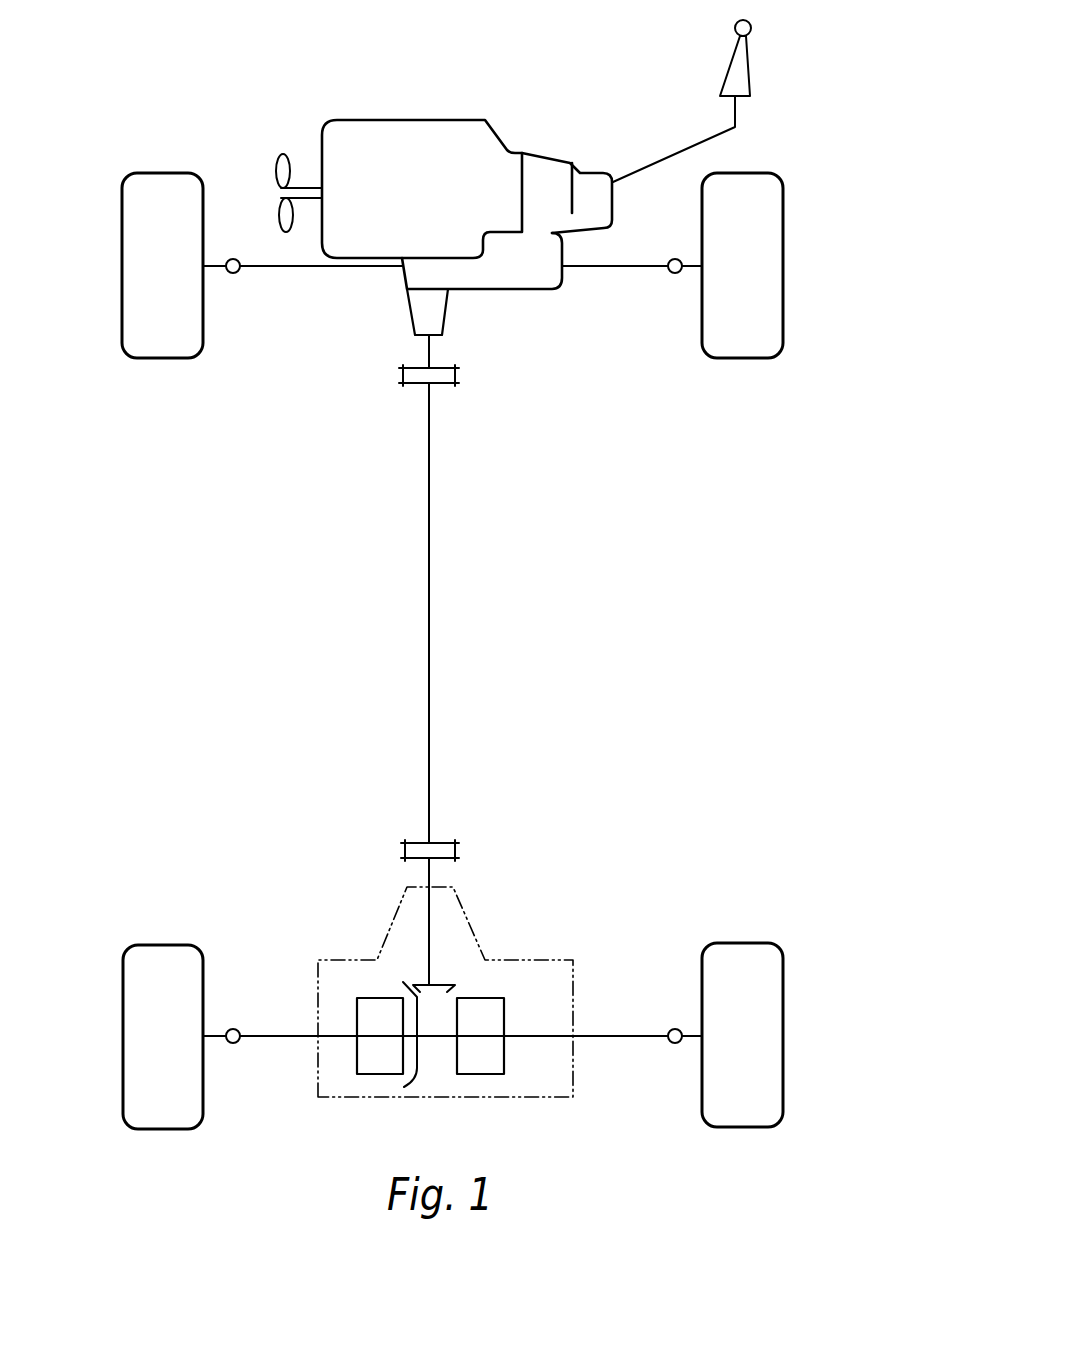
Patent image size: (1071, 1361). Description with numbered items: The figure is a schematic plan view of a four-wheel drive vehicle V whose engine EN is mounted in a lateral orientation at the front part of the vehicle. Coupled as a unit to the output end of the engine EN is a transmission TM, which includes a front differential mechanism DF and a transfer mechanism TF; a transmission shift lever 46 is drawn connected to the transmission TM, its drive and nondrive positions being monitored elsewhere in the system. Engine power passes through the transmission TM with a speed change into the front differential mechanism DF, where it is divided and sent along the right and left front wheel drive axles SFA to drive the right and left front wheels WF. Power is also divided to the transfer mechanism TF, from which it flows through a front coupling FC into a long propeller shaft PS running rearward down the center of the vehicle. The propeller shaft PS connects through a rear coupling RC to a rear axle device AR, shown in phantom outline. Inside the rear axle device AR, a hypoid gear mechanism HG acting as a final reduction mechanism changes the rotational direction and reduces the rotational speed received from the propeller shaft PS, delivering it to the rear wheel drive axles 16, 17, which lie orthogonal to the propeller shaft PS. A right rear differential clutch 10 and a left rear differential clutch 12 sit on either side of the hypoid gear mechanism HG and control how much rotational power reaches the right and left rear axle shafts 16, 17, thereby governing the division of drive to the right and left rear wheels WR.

The four-wheel drive vehicle V is at (157, 86).
The engine EN is at (404, 120).
The transmission TM is at (597, 172).
The transmission shift lever 46 is at (752, 68).
The front differential mechanism DF is at (495, 289).
The transfer mechanism TF is at (410, 312).
The front wheels WF is at (122, 265).
The front wheel drive axles SFA is at (287, 268).
The front coupling FC is at (455, 372).
The propeller shaft PS is at (430, 606).
The rear coupling RC is at (458, 850).
The rear axle device AR is at (386, 926).
The hypoid gear mechanism HG is at (418, 1060).
The rear differential clutch 12 is at (357, 1018).
The rear differential clutch 10 is at (483, 1075).
The rear wheel drive axle 17 is at (265, 1040).
The rear wheel drive axle 16 is at (630, 1036).
The rear wheels WR is at (123, 1037).